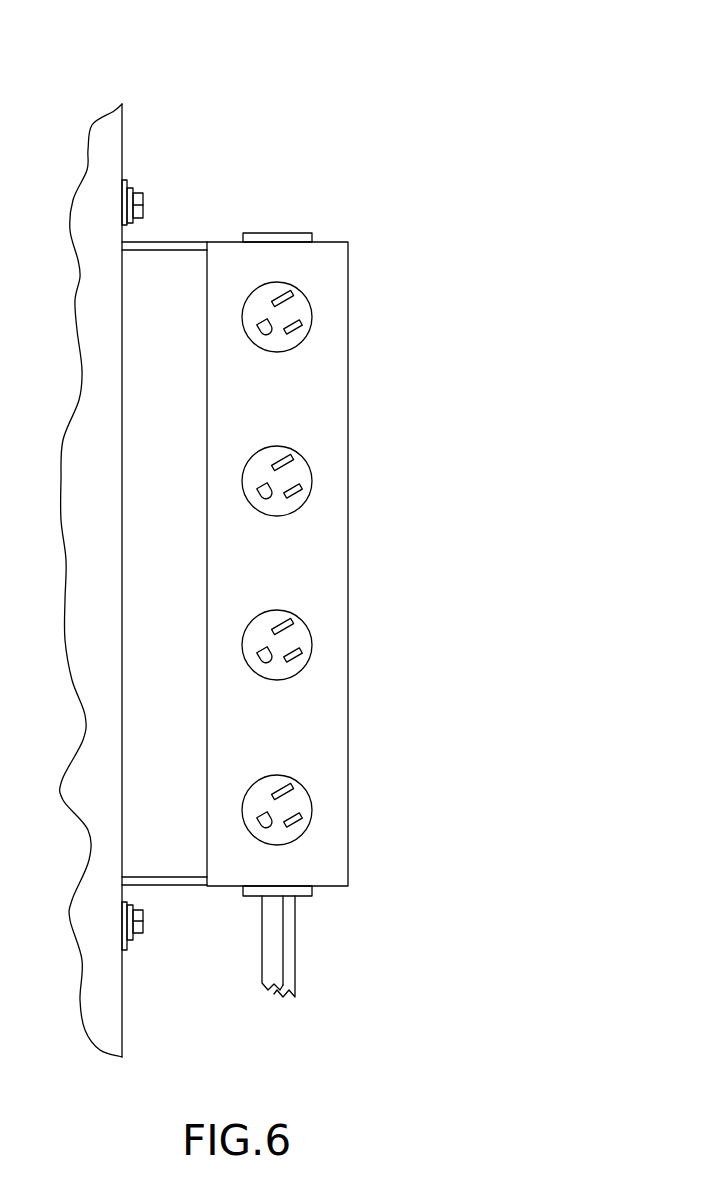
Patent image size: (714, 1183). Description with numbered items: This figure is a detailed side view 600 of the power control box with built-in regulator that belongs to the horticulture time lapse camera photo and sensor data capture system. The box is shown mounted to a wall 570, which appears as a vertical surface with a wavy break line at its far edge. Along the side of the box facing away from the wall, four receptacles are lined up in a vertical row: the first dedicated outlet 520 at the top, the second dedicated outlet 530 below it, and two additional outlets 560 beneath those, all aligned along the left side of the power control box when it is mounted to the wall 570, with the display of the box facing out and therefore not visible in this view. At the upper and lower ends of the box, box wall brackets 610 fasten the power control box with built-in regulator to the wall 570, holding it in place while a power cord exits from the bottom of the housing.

The detailed side view 600 is at (484, 106).
The wall 570 is at (115, 152).
The box wall brackets 610 is at (181, 242).
The first dedicated outlet 520 is at (303, 310).
The second dedicated outlet 530 is at (250, 478).
The additional outlets 560 is at (303, 637).